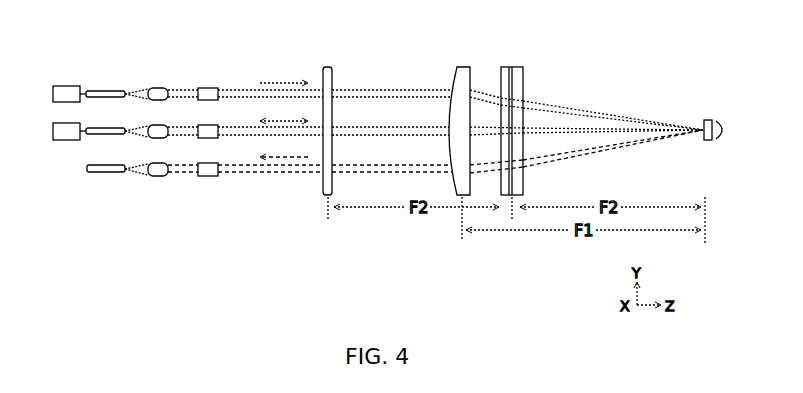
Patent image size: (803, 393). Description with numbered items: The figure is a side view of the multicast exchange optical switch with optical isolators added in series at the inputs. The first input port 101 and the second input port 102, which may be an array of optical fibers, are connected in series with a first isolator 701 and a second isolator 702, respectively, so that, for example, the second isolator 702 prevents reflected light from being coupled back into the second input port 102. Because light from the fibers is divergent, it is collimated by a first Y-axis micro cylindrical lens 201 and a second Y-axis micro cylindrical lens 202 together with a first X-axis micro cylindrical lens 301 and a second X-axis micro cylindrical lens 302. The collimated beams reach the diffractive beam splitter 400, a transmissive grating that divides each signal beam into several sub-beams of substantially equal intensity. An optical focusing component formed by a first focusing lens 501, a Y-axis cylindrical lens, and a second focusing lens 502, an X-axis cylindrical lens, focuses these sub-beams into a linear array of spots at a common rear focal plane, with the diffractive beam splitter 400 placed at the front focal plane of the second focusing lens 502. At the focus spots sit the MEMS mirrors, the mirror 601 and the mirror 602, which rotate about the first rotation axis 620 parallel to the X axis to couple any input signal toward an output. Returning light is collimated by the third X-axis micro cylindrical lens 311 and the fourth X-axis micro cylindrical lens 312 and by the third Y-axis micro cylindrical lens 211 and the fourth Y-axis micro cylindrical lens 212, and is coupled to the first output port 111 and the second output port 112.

The first isolator 701 is at (53, 92).
The second isolator 702 is at (53, 130).
The first input port 101 is at (117, 85).
The second input port 102 is at (117, 123).
The first output port 111 is at (108, 177).
The second output port 112 is at (106, 172).
The first Y-axis micro cylindrical lens 201 is at (159, 86).
The second Y-axis micro cylindrical lens 202 is at (159, 123).
The third Y-axis micro cylindrical lens 211 is at (158, 183).
The fourth Y-axis micro cylindrical lens 212 is at (156, 177).
The first X-axis micro cylindrical lens 301 is at (210, 86).
The second X-axis micro cylindrical lens 302 is at (210, 123).
The third X-axis micro cylindrical lens 311 is at (230, 183).
The fourth X-axis micro cylindrical lens 312 is at (207, 177).
The diffractive beam splitter 400 is at (328, 65).
The first focusing lens 501 is at (458, 65).
The second focusing lens 502 is at (511, 65).
The mirror 601 is at (702, 113).
The mirror 602 is at (708, 118).
The first rotation axis 620 is at (708, 142).